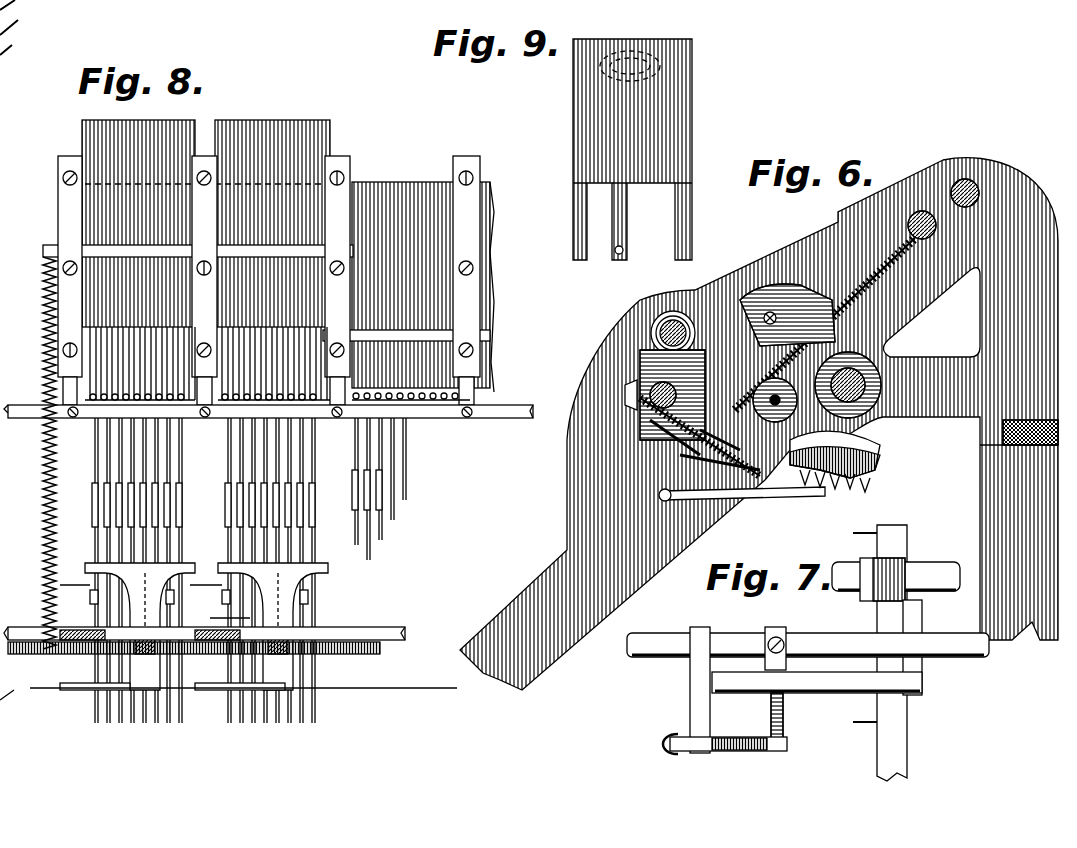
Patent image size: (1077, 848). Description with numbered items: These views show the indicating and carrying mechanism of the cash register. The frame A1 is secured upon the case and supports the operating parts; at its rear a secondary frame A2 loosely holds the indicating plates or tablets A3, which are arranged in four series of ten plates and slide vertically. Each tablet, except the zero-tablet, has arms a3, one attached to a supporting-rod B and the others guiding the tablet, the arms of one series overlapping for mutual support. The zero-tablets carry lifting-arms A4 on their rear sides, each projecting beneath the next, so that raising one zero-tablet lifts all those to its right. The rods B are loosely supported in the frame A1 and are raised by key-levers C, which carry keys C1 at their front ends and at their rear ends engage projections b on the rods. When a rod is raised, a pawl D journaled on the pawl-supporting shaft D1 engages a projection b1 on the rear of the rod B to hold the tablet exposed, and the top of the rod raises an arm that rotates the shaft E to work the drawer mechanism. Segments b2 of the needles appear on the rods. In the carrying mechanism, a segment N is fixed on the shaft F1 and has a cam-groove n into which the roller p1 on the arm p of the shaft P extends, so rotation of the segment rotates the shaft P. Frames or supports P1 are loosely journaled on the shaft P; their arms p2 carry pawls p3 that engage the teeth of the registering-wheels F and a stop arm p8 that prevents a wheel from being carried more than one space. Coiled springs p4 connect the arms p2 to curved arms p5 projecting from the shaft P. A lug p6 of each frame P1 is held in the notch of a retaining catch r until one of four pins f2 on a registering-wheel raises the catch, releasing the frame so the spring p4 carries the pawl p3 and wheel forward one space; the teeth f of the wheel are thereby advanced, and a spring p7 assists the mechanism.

In FIG. 6, the frame A1 is at (632, 512).
In FIG. 8, the secondary frame or case A2 is at (82, 208).
In FIG. 8, the indicating plates or tablets A3 is at (510, 282).
In FIG. 9, the indicating plates or tablets A3 is at (632, 149).
In FIG. 8, the lifting-arms A4 is at (490, 336).
In FIG. 8, the arms a3 is at (277, 363).
In FIG. 9, the arms a3 is at (580, 232).
In FIG. 8, the supporting-rod B is at (368, 438).
In FIG. 8, the projections b is at (88, 592).
In FIG. 8, the projection b1 is at (228, 622).
In FIG. 8, the needle shanks b2 is at (92, 505).
In FIG. 8, the key-levers C is at (315, 628).
In FIG. 8, the keys C1 is at (95, 612).
In FIG. 8, the pawls D is at (206, 626).
In FIG. 8, the pawl-supporting shaft D1 is at (358, 658).
In FIG. 6, the shaft E is at (678, 312).
In FIG. 7, the shaft E is at (940, 572).
In FIG. 6, the retaining arms or catches r is at (650, 333).
In FIG. 7, the retaining arms or catches r is at (860, 570).
In FIG. 6, the segment N is at (787, 315).
In FIG. 6, the cam-groove n is at (752, 410).
In FIG. 6, the registering-wheels F is at (866, 448).
In FIG. 7, the registering-wheels F is at (907, 722).
In FIG. 6, the shaft F1 is at (882, 382).
In FIG. 6, the cam tooth f is at (872, 484).
In FIG. 7, the pins or projections f2 is at (851, 629).
In FIG. 7, the shaft P is at (814, 630).
In FIG. 6, the frames or supports P1 is at (648, 436).
In FIG. 7, the frames or supports P1 is at (816, 693).
In FIG. 6, the arm p is at (648, 420).
In FIG. 6, the projection or roller p1 is at (722, 442).
In FIG. 6, the arms p2 is at (680, 460).
In FIG. 7, the arms p2 is at (692, 672).
In FIG. 6, the pawls p3 is at (752, 498).
In FIG. 7, the pawls p3 is at (666, 744).
In FIG. 7, the coiled springs p4 is at (784, 714).
In FIG. 7, the curved arms p5 is at (770, 628).
In FIG. 6, the lug or arm p6 is at (640, 352).
In FIG. 7, the lug or arm p6 is at (903, 604).
In FIG. 7, the spring p7 is at (726, 752).
In FIG. 6, the projection or arm p8 is at (868, 283).